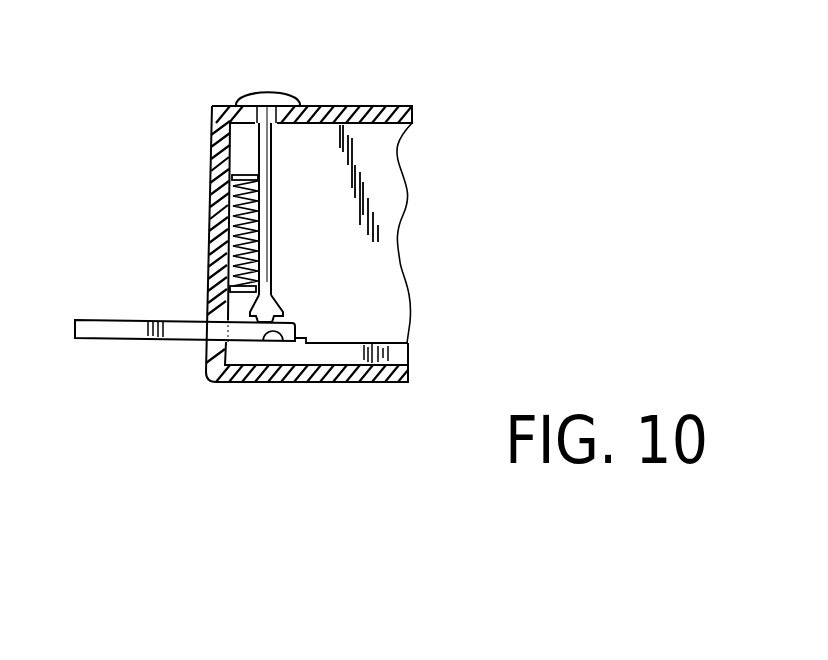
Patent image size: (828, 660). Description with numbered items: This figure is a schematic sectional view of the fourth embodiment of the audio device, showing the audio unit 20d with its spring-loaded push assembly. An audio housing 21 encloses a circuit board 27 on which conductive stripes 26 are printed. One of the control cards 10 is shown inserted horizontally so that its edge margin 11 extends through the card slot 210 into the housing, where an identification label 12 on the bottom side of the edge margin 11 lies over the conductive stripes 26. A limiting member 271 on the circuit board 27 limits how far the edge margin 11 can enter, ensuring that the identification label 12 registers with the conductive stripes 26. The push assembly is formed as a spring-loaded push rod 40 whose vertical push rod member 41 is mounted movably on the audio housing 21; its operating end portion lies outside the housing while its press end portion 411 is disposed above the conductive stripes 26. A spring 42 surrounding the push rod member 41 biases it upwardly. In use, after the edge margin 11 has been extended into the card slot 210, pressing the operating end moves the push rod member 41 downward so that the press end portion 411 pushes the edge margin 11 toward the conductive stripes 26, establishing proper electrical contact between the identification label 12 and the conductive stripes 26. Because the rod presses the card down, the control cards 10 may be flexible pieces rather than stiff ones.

The control card 10 is at (185, 318).
The edge margin 11 is at (248, 320).
The identification label 12 is at (258, 340).
The audio unit 20d is at (330, 232).
The audio housing 21 is at (342, 106).
The conductive stripes 26 is at (323, 344).
The circuit board 27 is at (398, 355).
The limiting member 271 is at (371, 352).
The card slot 210 is at (205, 343).
The spring-loaded push rod 40 is at (306, 178).
The push rod member 41 is at (268, 157).
The press end portion 411 is at (276, 310).
The spring 42 is at (229, 200).